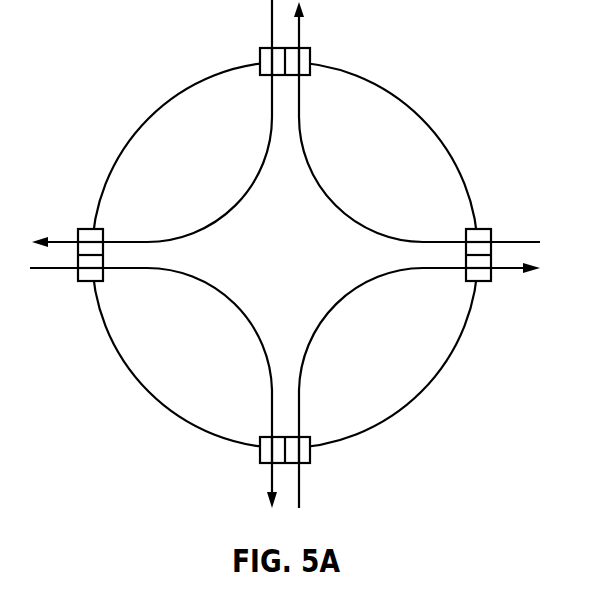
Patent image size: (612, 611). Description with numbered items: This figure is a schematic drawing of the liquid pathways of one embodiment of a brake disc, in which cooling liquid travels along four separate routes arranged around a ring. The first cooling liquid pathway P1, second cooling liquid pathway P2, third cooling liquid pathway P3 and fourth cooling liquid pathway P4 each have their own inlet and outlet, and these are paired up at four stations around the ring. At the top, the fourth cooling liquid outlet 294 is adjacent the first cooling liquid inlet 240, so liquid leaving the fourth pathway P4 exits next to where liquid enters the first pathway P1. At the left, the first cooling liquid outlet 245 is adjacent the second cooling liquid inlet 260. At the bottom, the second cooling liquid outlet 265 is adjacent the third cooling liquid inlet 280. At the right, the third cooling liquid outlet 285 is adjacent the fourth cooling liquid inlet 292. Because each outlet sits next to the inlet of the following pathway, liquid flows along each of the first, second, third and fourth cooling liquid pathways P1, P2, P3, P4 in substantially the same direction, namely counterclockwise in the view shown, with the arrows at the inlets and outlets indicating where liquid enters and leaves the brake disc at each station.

The first cooling liquid inlet 240 is at (262, 58).
The fourth cooling liquid outlet 294 is at (305, 58).
The first cooling liquid outlet 245 is at (87, 237).
The second cooling liquid inlet 260 is at (88, 277).
The fourth cooling liquid inlet 292 is at (482, 237).
The third cooling liquid outlet 285 is at (482, 280).
The second cooling liquid outlet 265 is at (267, 452).
The third cooling liquid inlet 280 is at (303, 452).
The first cooling liquid pathway P1 is at (229, 211).
The second cooling liquid pathway P2 is at (229, 299).
The third cooling liquid pathway P3 is at (341, 299).
The fourth cooling liquid pathway P4 is at (341, 211).